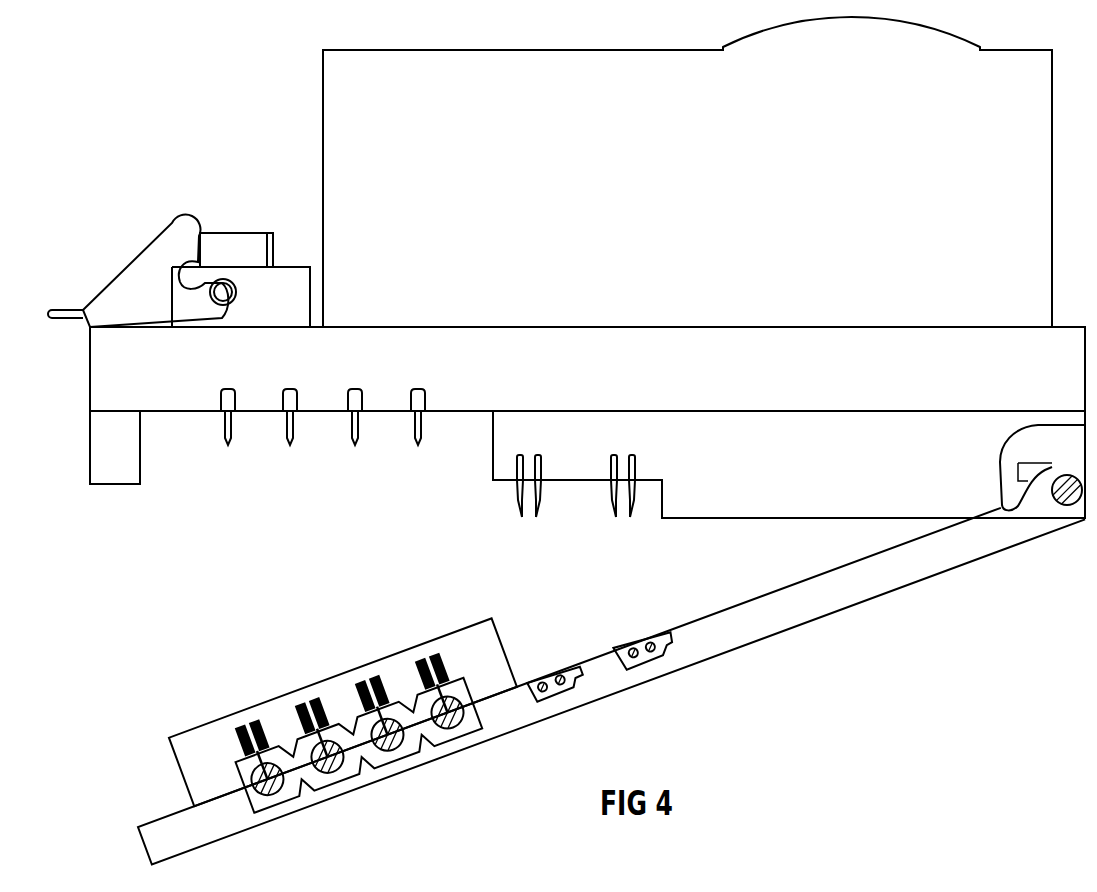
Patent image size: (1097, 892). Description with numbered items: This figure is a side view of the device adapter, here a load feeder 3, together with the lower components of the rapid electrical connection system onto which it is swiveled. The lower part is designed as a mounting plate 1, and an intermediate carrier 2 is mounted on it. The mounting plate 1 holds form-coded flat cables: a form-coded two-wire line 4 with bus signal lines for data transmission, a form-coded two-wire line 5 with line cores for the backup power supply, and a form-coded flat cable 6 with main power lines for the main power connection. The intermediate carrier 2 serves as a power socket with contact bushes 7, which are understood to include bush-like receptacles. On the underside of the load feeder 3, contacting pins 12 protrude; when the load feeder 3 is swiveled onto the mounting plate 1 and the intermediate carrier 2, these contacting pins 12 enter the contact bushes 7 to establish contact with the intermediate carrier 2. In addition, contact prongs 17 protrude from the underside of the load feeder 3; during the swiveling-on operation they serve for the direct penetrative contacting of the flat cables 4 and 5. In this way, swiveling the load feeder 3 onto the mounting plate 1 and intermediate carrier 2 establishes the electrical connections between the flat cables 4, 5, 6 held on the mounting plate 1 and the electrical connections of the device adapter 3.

The mounting plate 1 is at (862, 586).
The intermediate carrier 2 is at (200, 742).
The device adapter 3 is at (1003, 200).
The form-coded two-wire line 4 is at (662, 635).
The form-coded two-wire line 5 is at (572, 667).
The form-coded flat cable 6 is at (465, 731).
The contact bushes 7 is at (247, 724).
The contacting pins 12 is at (228, 445).
The contact prongs 17 is at (575, 501).